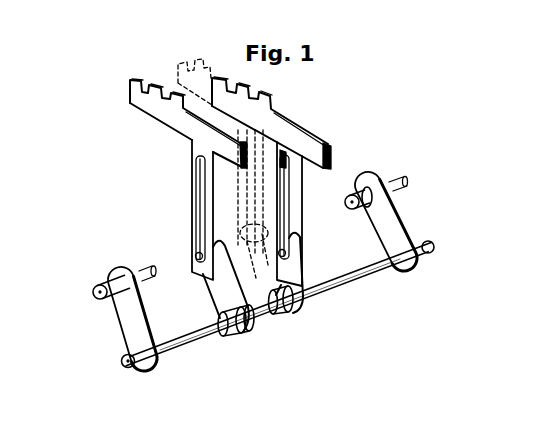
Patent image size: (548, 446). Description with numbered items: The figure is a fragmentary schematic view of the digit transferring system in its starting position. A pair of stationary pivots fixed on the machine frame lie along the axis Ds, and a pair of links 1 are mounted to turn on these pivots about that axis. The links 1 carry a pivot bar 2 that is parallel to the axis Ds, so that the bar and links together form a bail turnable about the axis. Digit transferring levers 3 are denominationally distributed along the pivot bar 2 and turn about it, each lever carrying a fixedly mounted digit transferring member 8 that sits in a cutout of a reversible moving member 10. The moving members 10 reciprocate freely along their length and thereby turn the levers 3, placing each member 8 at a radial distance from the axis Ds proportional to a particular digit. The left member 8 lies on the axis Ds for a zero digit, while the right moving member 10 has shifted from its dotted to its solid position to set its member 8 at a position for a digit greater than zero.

The reversible moving member 10 is at (163, 118).
The digit transferring lever 3 is at (208, 288).
The digit transferring member 8 is at (196, 257).
The pivot bar 2 is at (353, 276).
The link 1 is at (123, 318).
The axis Ds is at (97, 292).